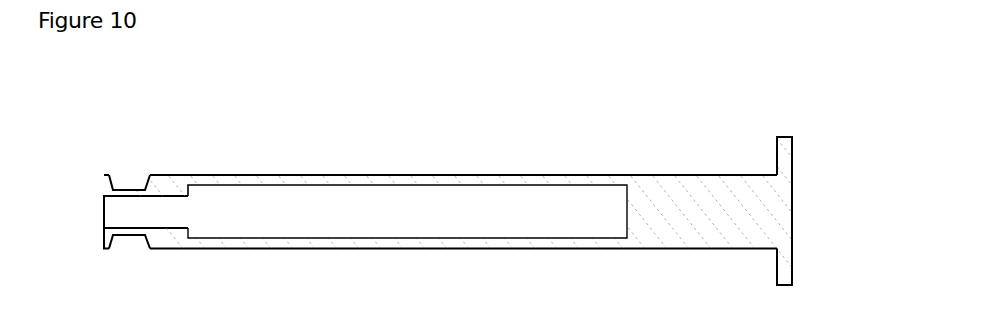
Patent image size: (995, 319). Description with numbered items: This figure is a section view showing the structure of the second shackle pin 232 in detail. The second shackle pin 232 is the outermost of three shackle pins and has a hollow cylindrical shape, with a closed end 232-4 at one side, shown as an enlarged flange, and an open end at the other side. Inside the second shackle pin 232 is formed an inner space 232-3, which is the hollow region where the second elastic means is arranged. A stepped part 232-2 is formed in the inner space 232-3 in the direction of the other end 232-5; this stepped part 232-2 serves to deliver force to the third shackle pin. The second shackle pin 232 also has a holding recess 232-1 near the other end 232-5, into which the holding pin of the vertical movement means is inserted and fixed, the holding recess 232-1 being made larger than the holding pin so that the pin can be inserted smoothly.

The second shackle pin 232 is at (620, 163).
The holding recess 232-1 is at (136, 186).
The stepped part 232-2 is at (191, 190).
The inner space 232-3 is at (377, 217).
The closed end 232-4 is at (793, 217).
The other end 232-5 is at (104, 235).